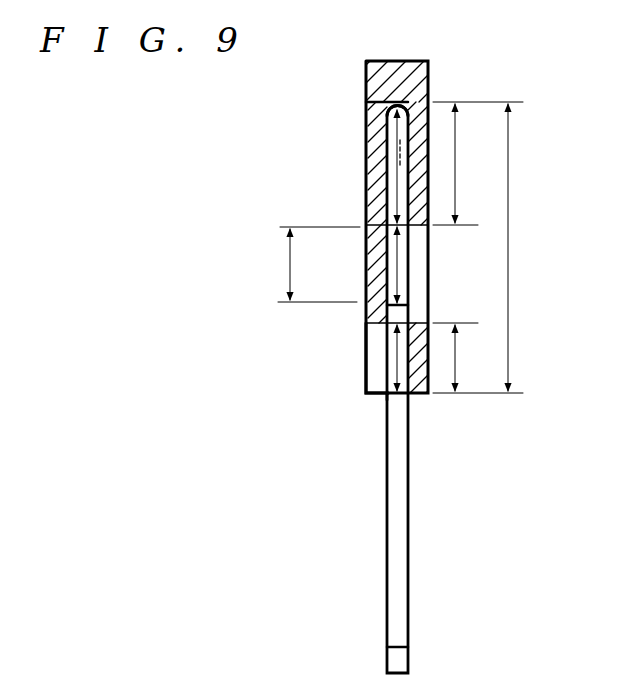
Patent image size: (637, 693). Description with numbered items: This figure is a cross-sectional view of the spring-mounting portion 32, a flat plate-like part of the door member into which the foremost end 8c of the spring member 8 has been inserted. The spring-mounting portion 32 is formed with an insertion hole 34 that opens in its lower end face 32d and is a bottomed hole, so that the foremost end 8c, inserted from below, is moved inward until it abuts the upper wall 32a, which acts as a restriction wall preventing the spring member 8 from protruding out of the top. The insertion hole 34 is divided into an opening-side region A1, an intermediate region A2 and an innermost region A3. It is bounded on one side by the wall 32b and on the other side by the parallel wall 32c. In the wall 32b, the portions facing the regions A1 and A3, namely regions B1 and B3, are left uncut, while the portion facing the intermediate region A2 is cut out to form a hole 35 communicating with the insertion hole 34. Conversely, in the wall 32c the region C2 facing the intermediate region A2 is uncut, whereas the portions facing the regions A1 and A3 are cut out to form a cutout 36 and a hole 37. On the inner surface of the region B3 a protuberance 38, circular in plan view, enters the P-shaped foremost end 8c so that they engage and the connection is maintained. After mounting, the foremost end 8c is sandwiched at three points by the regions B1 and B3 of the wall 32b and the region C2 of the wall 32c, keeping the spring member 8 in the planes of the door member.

The spring-mounting portion 32 is at (498, 73).
The upper wall 32a is at (375, 78).
The wall on one-surface side 32b is at (531, 247).
The wall on other-surface side 32c is at (371, 264).
The lower end face 32d is at (411, 395).
The spring member 8 is at (407, 520).
The foremost end 8c is at (386, 135).
The insertion hole 34 is at (389, 398).
The hole 35 is at (434, 253).
The cutout 36 is at (363, 372).
The hole 37 is at (363, 203).
The protuberance 38 is at (380, 150).
The opening-side region A1 is at (393, 345).
The intermediate region A2 is at (402, 297).
The innermost region A3 is at (393, 172).
The region B1 is at (478, 358).
The region B3 is at (478, 163).
The region C2 is at (306, 264).